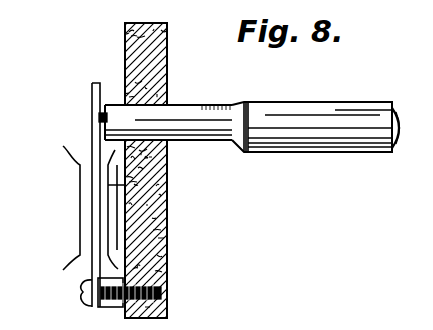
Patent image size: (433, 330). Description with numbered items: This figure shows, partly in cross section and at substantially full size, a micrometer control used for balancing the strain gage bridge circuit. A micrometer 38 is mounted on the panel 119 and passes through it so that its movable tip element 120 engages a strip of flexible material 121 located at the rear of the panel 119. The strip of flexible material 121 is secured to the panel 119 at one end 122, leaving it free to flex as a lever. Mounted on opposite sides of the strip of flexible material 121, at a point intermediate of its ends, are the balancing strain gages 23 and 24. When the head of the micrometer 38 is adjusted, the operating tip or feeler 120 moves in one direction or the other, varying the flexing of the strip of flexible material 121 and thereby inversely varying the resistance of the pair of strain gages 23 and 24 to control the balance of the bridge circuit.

The panel 119 is at (167, 60).
The micrometer 38 is at (353, 122).
The movable tip element 120 is at (101, 117).
The strip of flexible material 121 is at (92, 124).
The balancing strain gage 23 is at (80, 190).
The balancing strain gage 24 is at (157, 190).
The secured end of the strip 122 is at (90, 301).